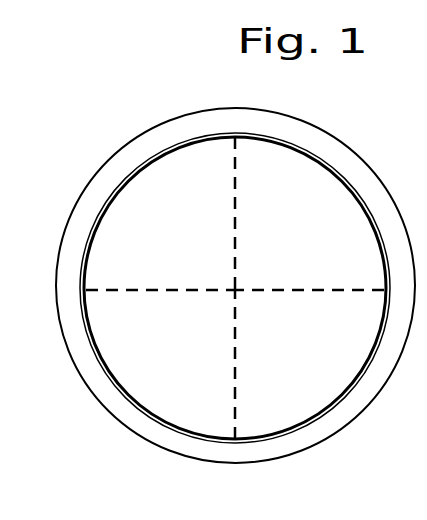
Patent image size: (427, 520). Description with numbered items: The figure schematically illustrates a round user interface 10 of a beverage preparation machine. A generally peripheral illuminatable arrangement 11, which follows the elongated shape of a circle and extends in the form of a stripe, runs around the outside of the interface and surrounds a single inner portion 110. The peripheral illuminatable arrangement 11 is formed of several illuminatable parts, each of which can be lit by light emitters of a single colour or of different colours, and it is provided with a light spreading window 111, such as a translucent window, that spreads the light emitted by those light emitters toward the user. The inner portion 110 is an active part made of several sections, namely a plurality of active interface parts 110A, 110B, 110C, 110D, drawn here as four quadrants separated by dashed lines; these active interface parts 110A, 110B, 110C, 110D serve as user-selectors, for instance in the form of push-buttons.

The light guide plate / optical member 10 is at (158, 84).
The peripheral illuminatable arrangement 11 is at (293, 132).
The light spreading window 111 is at (193, 122).
The inner portion 110 is at (187, 387).
The active interface part 110A is at (295, 190).
The active interface part 110B is at (303, 392).
The active interface part 110C is at (187, 370).
The active interface part 110D is at (157, 202).